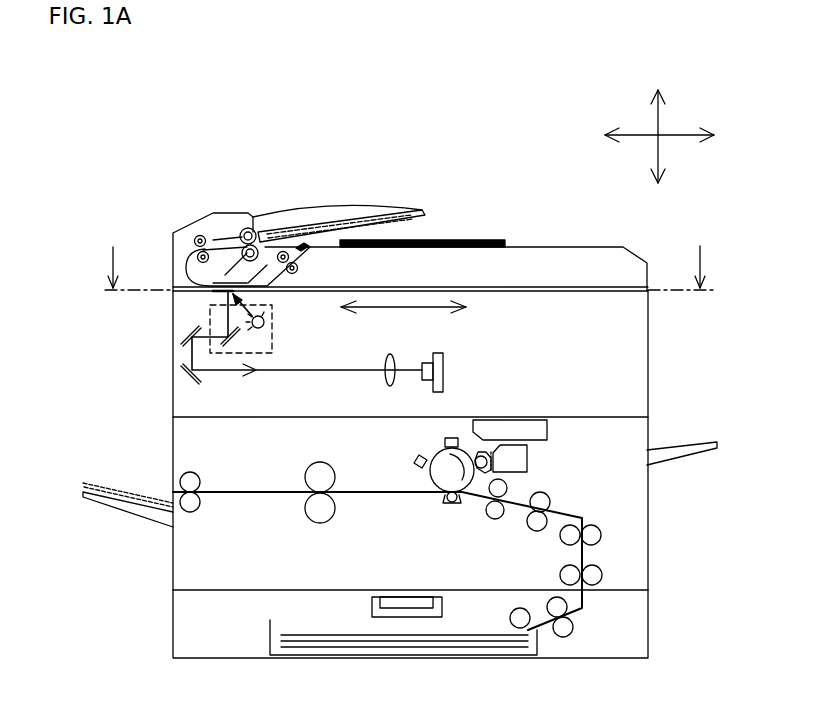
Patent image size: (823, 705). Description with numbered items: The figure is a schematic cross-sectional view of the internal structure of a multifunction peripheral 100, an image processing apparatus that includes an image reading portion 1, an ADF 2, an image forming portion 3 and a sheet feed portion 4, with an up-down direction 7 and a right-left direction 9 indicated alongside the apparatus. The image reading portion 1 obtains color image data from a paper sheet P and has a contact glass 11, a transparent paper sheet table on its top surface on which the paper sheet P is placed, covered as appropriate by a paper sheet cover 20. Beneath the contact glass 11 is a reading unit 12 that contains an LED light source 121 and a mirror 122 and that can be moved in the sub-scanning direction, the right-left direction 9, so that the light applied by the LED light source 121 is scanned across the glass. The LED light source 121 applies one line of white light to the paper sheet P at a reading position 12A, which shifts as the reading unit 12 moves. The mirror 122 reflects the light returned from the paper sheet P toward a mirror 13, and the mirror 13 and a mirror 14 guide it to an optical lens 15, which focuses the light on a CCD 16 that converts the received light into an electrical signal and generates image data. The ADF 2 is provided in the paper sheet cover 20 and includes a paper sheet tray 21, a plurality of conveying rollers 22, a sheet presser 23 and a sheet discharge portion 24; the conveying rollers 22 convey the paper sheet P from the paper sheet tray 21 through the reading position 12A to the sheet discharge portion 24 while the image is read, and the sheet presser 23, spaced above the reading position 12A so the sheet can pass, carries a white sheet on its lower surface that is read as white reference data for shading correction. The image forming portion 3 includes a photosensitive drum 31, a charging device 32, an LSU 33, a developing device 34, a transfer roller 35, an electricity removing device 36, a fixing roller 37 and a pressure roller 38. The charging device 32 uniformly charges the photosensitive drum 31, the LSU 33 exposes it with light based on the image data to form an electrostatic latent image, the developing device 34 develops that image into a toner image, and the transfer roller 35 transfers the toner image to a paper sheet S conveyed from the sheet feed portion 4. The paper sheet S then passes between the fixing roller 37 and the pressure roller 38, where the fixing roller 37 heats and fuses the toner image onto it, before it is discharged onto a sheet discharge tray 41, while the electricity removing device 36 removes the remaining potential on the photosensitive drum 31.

The multifunction peripheral 100 is at (137, 206).
The image reading portion 1 is at (648, 342).
The ADF 2 is at (283, 186).
The image forming portion 3 is at (648, 518).
The sheet feed portion 4 is at (648, 620).
The up-down direction 7 is at (664, 153).
The right-left direction 9 is at (632, 136).
The contact glass 11 is at (512, 299).
The reading unit 12 is at (278, 303).
The reading position 12A is at (211, 294).
The LED light source 121 is at (270, 321).
The mirror 122 is at (240, 338).
The mirror 13 is at (185, 339).
The mirror 14 is at (185, 376).
The optical lens 15 is at (387, 358).
The CCD 16 is at (434, 358).
The paper sheet cover 20 is at (648, 277).
The paper sheet tray 21 is at (367, 212).
The conveying rollers 22 is at (198, 237).
The sheet presser 23 is at (213, 283).
The sheet discharge portion 24 is at (408, 250).
The photosensitive drum 31 is at (430, 480).
The charging device 32 is at (447, 442).
The LSU 33 is at (547, 425).
The developing device 34 is at (484, 477).
The transfer roller 35 is at (454, 504).
The electricity removing device 36 is at (418, 460).
The fixing roller 37 is at (320, 462).
The pressure roller 38 is at (310, 520).
The sheet discharge tray 41 is at (120, 512).
The paper sheet P is at (348, 222).
The paper sheet S is at (300, 633).